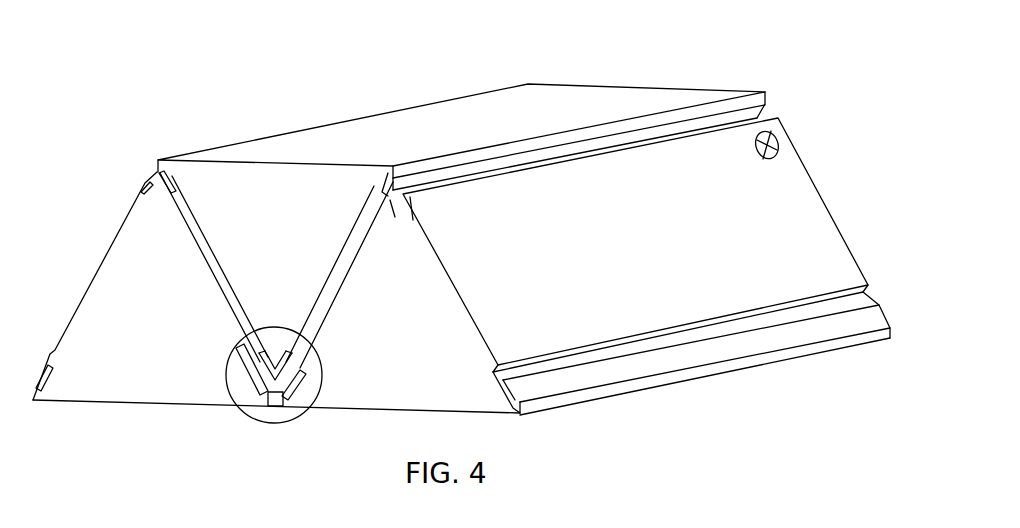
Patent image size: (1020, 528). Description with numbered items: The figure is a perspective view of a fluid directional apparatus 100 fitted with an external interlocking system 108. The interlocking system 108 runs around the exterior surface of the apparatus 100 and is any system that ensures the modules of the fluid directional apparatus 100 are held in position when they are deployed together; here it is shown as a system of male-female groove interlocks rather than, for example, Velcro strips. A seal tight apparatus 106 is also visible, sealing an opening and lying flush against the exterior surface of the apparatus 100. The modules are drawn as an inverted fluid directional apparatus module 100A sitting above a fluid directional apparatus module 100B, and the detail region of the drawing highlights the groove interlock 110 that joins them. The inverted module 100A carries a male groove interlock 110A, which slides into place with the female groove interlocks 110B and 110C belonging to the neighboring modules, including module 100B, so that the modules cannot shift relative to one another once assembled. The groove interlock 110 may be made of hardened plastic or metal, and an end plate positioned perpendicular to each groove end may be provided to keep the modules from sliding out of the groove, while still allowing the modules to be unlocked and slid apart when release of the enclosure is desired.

The fluid directional apparatus 100 is at (461, 255).
The inverted fluid directional apparatus module 100A is at (268, 223).
The fluid directional apparatus module 100B is at (154, 318).
The seal tight apparatus 106 is at (771, 132).
The interlocking system 108 is at (277, 410).
The groove interlock 110 is at (294, 377).
The male groove interlock 110A is at (262, 345).
The female groove interlock 110B is at (248, 378).
The female groove interlock 110C is at (300, 406).